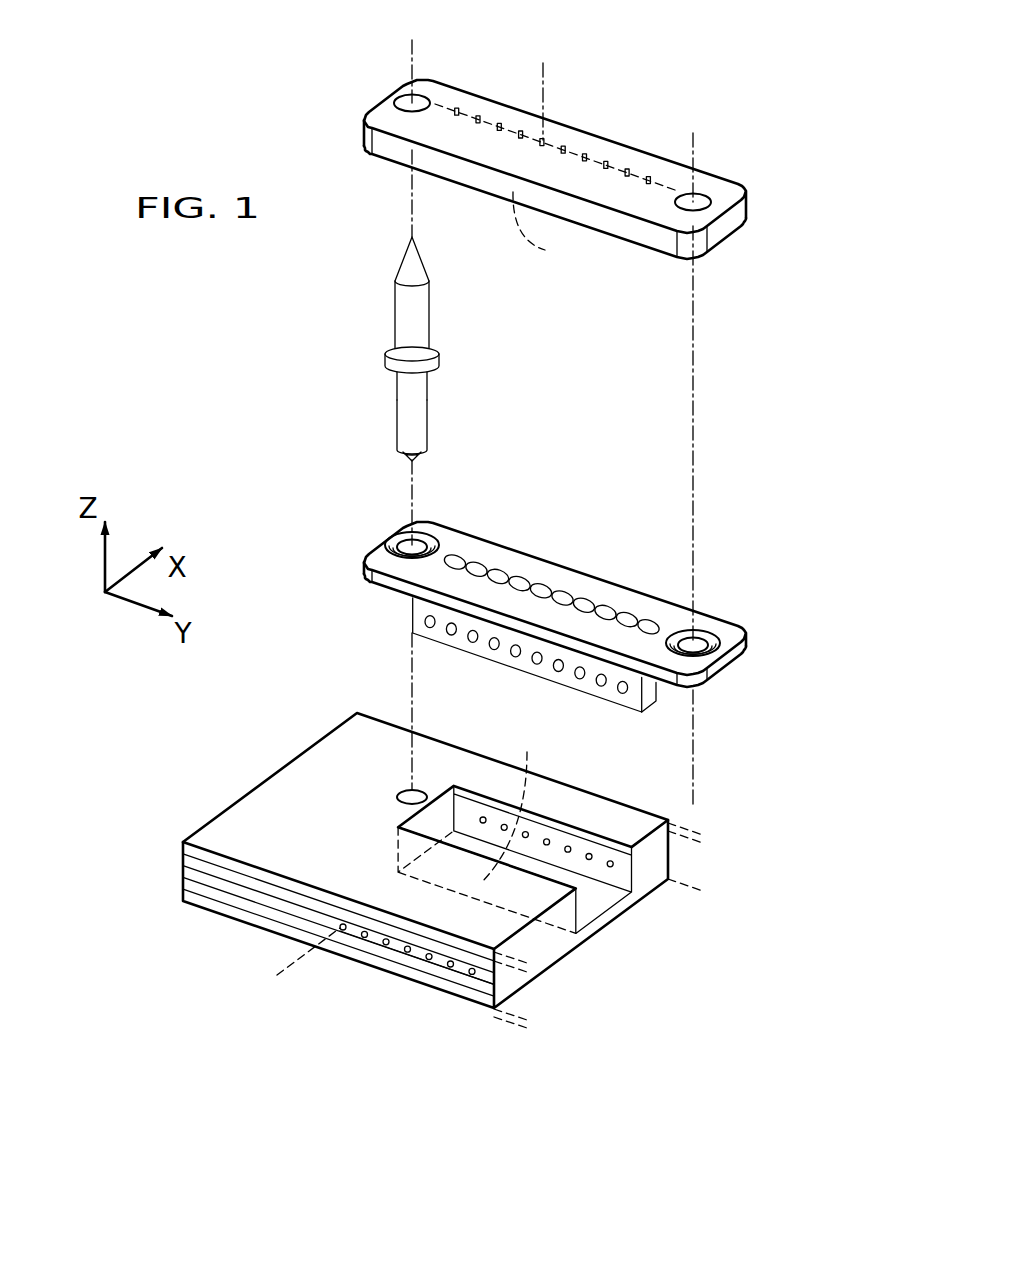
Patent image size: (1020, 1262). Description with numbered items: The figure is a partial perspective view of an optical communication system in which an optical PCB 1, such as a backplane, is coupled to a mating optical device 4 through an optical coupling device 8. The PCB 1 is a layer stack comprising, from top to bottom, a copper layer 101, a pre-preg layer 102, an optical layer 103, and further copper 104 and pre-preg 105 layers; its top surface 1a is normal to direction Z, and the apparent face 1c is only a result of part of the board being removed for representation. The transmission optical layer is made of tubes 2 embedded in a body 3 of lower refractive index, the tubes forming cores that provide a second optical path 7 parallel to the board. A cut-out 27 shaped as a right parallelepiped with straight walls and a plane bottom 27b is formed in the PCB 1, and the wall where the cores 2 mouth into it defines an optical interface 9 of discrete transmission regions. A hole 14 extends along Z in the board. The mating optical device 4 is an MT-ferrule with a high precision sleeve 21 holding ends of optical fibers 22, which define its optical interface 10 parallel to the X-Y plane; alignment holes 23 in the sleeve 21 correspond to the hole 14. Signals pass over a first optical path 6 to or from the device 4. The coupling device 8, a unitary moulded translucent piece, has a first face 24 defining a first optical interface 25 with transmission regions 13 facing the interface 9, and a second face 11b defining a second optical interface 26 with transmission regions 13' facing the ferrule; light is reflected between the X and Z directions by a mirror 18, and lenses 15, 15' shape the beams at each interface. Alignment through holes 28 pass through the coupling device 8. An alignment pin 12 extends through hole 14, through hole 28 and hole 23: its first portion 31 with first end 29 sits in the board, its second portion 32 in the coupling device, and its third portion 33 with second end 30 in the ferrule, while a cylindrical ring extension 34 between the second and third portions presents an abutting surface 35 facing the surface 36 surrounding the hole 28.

The optical PCB 1 is at (420, 897).
The top surface of the PCB 1a is at (520, 913).
The face 1c is at (653, 868).
The tubes 2 is at (400, 993).
The body 3 is at (357, 935).
The mating optical device 4 is at (564, 149).
The first optical path 6 is at (546, 84).
The second optical path 7 is at (295, 963).
The optical coupling device 8 is at (551, 625).
The optical interface of the PCB 9 is at (546, 800).
The optical interface of the mating optical device 10 is at (547, 229).
The second face 11b is at (372, 556).
The alignment pin 12 is at (386, 332).
The transmission regions 13 is at (495, 689).
The transmission regions 13' is at (595, 565).
The hole 14 is at (398, 793).
The light beam forming structure 15 is at (615, 721).
The light beam forming structure 15' is at (690, 587).
The mirror 18 is at (645, 703).
The sleeve 21 is at (723, 230).
The optical fibers 22 is at (607, 170).
The alignment holes 23 is at (405, 97).
The first face 24 is at (506, 687).
The first optical interface 25 is at (522, 659).
The second optical interface 26 is at (595, 565).
The cut-out 27 is at (587, 902).
The plane bottom 27b is at (593, 923).
The alignment through holes 28 is at (393, 548).
The first end 29 is at (410, 461).
The second end 30 is at (412, 237).
The first portion 31 is at (448, 403).
The second portion 32 is at (448, 363).
The third portion 33 is at (448, 240).
The extension 34 is at (392, 358).
The abutting surface 35 is at (392, 370).
The surface 36 is at (550, 598).
The copper layer 101 is at (213, 848).
The pre-preg layer 102 is at (190, 852).
The optical layer 103 is at (200, 870).
The copper layer 104 is at (228, 890).
The pre-preg layer 105 is at (405, 975).